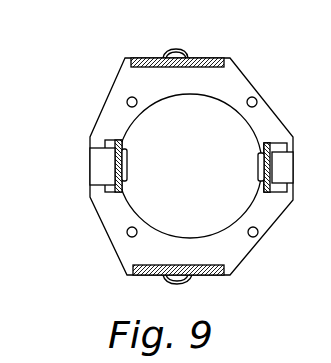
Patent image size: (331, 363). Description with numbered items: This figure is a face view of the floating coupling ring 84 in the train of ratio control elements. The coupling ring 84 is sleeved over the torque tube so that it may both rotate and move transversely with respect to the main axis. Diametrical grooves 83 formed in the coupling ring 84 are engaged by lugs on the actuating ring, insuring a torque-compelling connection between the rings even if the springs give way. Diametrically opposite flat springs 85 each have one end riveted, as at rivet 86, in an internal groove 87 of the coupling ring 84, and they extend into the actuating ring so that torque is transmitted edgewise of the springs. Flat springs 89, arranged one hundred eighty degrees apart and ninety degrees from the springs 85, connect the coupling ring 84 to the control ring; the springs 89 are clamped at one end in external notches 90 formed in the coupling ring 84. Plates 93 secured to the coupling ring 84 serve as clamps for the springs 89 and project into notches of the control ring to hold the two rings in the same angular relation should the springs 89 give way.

The diametrical groove 83 is at (288, 165).
The floating coupling ring 84 is at (255, 87).
The flat spring 85 is at (122, 188).
The rivet 86 is at (127, 167).
The internal groove 87 is at (125, 143).
The flat spring 89 is at (208, 67).
The external notch 90 is at (220, 58).
The plate 93 is at (97, 167).